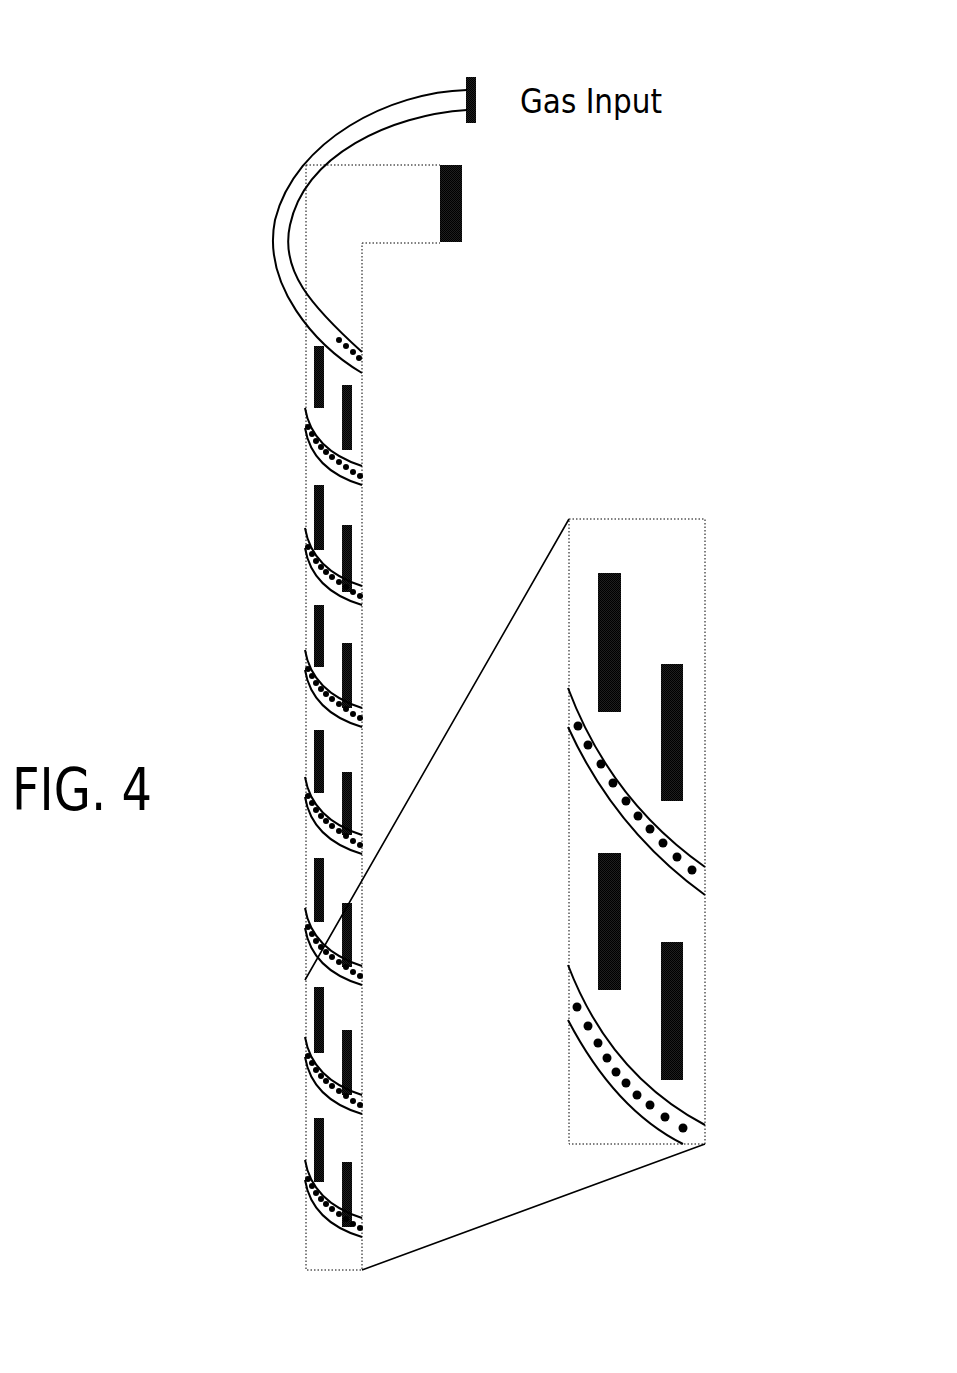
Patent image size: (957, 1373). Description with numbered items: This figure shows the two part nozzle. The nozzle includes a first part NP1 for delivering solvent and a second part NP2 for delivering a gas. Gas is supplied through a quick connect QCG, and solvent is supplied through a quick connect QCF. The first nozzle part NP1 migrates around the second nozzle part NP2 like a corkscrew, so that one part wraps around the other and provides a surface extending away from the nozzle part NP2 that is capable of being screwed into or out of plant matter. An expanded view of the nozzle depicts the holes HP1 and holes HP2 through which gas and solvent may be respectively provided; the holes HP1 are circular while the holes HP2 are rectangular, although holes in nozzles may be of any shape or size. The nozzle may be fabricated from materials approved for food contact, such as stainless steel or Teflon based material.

The quick connect for gas QCG is at (476, 82).
The quick connect for solvent QCF is at (462, 242).
The first nozzle part NP1 is at (370, 330).
The second nozzle part NP2 is at (296, 312).
The gas holes HP1 is at (692, 870).
The solvent holes HP2 is at (683, 732).